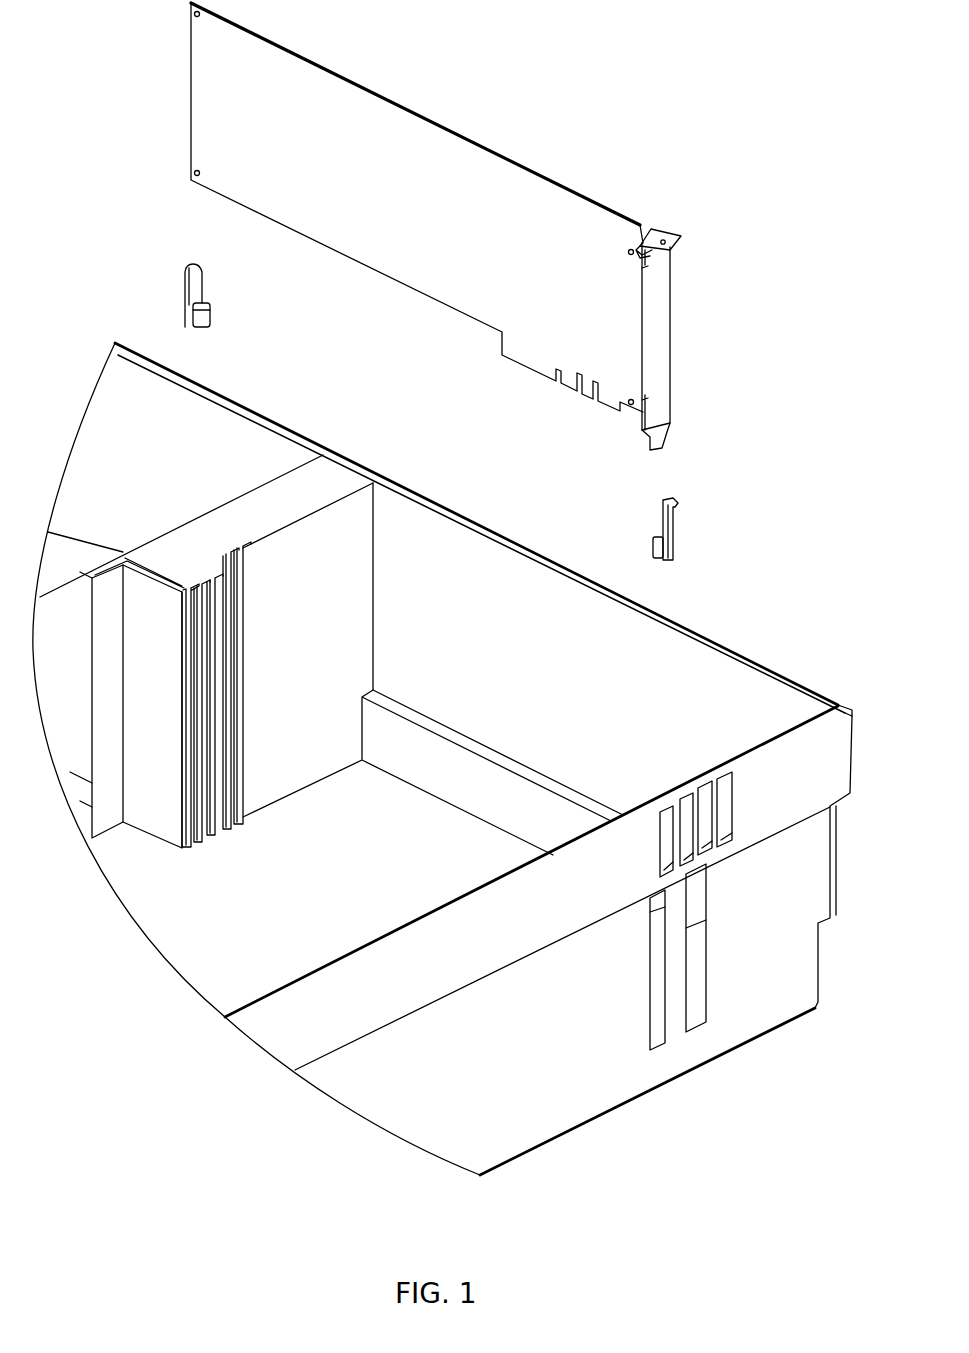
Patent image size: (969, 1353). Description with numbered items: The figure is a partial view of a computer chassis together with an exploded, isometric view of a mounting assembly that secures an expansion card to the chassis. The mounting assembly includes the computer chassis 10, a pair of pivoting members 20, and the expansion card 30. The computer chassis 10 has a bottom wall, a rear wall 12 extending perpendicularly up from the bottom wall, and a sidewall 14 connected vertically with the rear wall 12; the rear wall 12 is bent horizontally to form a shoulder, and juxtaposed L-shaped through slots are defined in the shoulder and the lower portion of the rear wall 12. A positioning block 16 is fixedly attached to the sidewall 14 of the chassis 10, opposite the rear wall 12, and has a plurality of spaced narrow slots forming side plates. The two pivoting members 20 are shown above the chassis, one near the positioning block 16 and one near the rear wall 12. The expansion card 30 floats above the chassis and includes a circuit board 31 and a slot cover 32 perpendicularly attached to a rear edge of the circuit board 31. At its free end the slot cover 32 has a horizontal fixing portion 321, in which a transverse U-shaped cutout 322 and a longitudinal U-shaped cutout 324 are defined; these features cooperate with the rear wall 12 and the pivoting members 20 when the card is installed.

The computer chassis 10 is at (443, 759).
The rear wall 12 is at (625, 1078).
The sidewall 14 is at (430, 545).
The positioning block 16 is at (323, 473).
The pivoting members 20 is at (192, 300).
The expansion card 30 is at (451, 226).
The circuit board 31 is at (214, 100).
The slot cover 32 is at (714, 304).
The fixing portion 321 is at (672, 238).
The transverse U-shaped cutout 322 is at (648, 241).
The longitudinal U-shaped cutout 324 is at (670, 250).